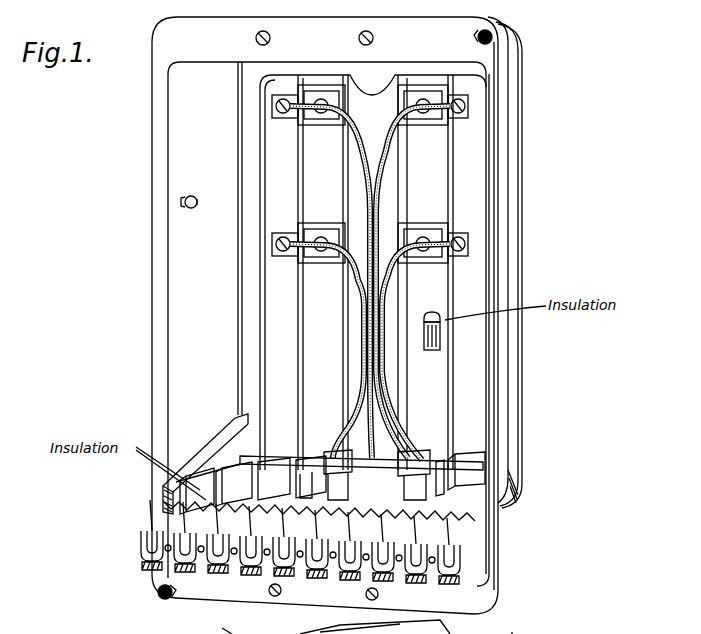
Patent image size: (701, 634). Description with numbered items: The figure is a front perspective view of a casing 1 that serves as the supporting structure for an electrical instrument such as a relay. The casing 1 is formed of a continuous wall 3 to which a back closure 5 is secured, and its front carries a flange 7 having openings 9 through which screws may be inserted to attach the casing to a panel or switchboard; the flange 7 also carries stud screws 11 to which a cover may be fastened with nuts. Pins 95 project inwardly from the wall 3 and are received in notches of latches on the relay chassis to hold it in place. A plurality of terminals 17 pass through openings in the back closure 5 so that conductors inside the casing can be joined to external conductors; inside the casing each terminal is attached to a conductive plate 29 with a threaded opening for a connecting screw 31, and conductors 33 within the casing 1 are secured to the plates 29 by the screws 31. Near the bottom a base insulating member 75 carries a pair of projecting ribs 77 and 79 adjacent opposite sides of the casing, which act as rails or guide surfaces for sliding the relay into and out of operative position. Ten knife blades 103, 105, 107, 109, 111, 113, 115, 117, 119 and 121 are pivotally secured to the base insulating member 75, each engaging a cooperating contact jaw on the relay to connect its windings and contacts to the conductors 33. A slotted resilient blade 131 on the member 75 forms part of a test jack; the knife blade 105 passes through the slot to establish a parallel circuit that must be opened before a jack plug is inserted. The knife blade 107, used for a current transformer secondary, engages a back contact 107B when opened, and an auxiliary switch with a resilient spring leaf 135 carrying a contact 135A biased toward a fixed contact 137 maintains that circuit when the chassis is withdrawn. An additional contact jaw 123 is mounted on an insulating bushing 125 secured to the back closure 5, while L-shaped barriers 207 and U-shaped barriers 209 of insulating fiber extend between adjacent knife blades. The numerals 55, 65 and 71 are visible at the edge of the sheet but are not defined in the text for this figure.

The casing 1 is at (518, 282).
The continuous wall 3 is at (184, 326).
The back closure 5 is at (466, 188).
The flange 7 is at (496, 601).
The openings 9 is at (255, 38).
The stud screws 11 is at (492, 34).
The terminals 17 is at (316, 240).
The conductive plate 29 is at (283, 232).
The connecting screw 31 is at (287, 258).
The conductors 33 is at (362, 309).
The cover part 55 is at (515, 626).
The cover strip 65 is at (400, 624).
The cover element 71 is at (215, 626).
The base insulating member 75 is at (304, 456).
The projecting rib 77 is at (246, 422).
The projecting rib 79 is at (466, 456).
The pins 95 is at (193, 197).
The knife blade 103 is at (448, 586).
The knife blade 105 is at (412, 584).
The knife blade 107 is at (378, 584).
The back contact 107B is at (392, 512).
The knife blade 109 is at (350, 581).
The knife blade 111 is at (316, 578).
The knife blade 113 is at (284, 577).
The knife blade 115 is at (252, 575).
The knife blade 117 is at (222, 573).
The knife blade 119 is at (190, 572).
The knife blade 121 is at (152, 566).
The contact jaw 123 is at (433, 352).
The insulating bushing 125 is at (432, 311).
The resilient blade 131 is at (442, 466).
The resilient spring leaf 135 is at (412, 440).
The contact 135A is at (420, 452).
The fixed contact 137 is at (360, 426).
The L-shaped barrier 207 is at (204, 470).
The U-shaped barrier 209 is at (236, 470).